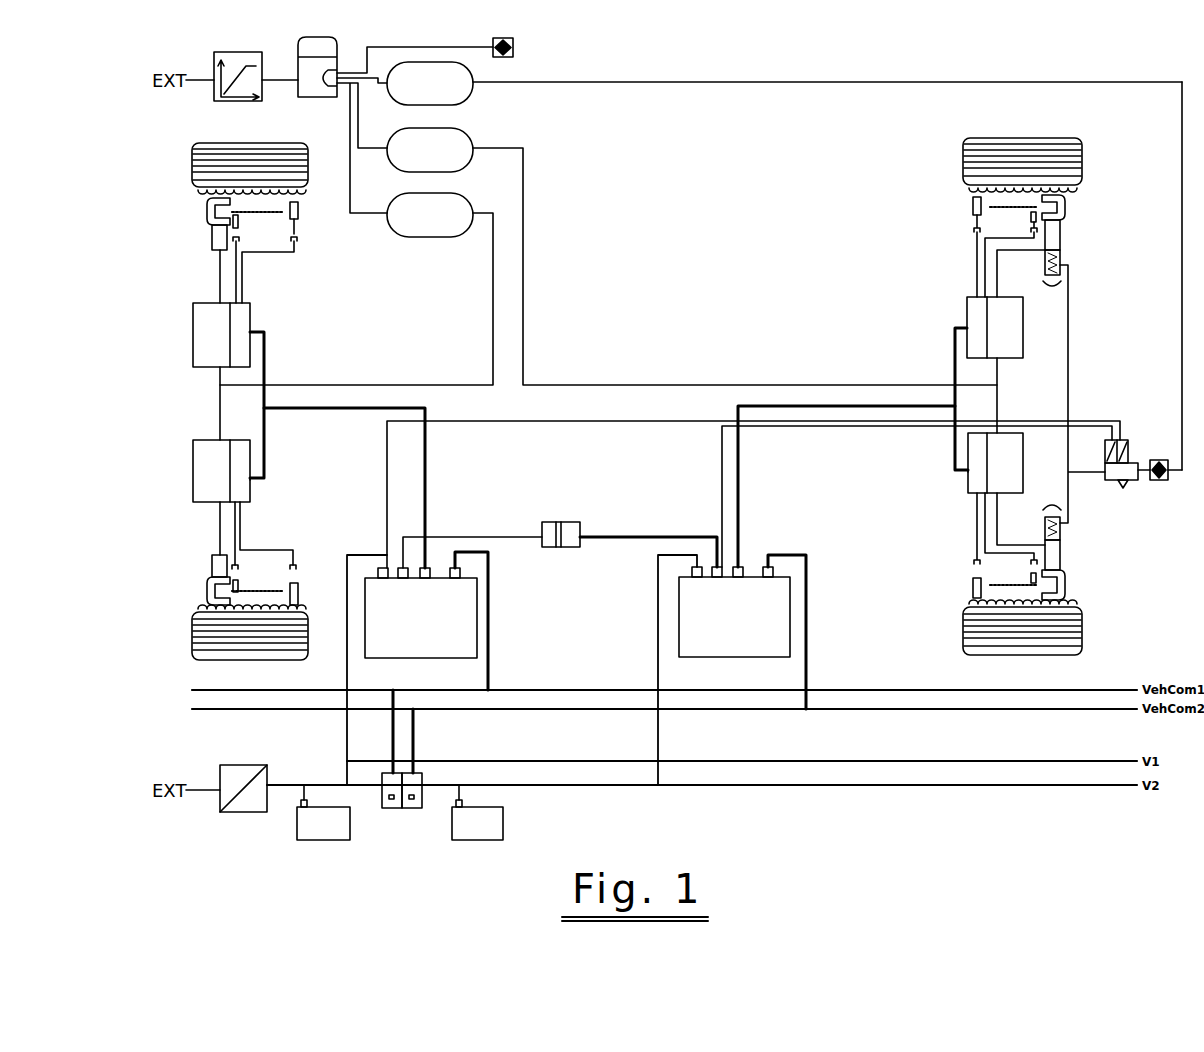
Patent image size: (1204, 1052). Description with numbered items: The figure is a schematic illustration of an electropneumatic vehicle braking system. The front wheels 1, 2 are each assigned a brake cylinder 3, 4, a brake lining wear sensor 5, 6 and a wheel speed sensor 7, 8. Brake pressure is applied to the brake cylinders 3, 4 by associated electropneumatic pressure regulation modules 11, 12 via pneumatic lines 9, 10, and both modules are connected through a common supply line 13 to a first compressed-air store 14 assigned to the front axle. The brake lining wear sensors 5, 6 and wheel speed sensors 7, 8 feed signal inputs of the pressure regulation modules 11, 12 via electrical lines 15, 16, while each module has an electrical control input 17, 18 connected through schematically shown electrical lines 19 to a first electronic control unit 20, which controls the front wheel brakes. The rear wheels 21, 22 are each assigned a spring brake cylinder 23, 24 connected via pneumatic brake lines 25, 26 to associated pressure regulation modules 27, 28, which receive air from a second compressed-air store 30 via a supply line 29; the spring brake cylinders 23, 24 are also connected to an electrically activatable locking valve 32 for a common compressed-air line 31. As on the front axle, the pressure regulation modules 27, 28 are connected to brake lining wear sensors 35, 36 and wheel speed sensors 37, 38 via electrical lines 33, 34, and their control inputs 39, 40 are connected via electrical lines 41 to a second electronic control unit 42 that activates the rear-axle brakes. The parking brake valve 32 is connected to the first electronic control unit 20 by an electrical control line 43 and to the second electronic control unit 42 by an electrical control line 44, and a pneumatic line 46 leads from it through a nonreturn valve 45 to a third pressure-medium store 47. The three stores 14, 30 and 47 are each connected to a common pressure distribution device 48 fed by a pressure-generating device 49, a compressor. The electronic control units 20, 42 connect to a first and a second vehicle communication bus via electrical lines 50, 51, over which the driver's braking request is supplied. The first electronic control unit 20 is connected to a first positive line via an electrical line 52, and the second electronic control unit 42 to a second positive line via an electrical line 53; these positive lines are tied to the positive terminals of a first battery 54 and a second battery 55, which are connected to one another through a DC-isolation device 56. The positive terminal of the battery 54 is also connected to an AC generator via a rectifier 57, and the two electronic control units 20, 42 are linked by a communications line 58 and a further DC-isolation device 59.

The front wheel 1 is at (192, 165).
The front wheel 2 is at (192, 636).
The brake cylinder 3 is at (207, 212).
The brake cylinder 4 is at (207, 590).
The brake lining wear sensor 5 is at (240, 224).
The brake lining wear sensor 6 is at (240, 588).
The wheel speed sensor 7 is at (299, 211).
The wheel speed sensor 8 is at (299, 598).
The pneumatic line 9 is at (219, 274).
The pneumatic line 10 is at (219, 527).
The electropneumatic pressure regulation module 11 is at (200, 326).
The electropneumatic pressure regulation module 12 is at (198, 458).
The common supply line 13 is at (396, 384).
The first compressed-air store 14 is at (428, 226).
The electrical line 15 is at (238, 268).
The electrical line 16 is at (243, 288).
The electrical control input 17 is at (265, 333).
The electrical control input 18 is at (252, 480).
The electrical lines 19 is at (326, 412).
The first electronic control unit 20 is at (422, 650).
The rear wheel 21 is at (1082, 163).
The rear wheel 22 is at (1082, 630).
The spring brake cylinder 23 is at (1061, 239).
The spring brake cylinder 24 is at (1061, 562).
The pneumatic brake line 25 is at (998, 276).
The pneumatic brake line 26 is at (998, 528).
The pressure regulation module 27 is at (1012, 310).
The pressure regulation module 28 is at (1012, 447).
The supply line 29 is at (716, 383).
The second compressed-air store 30 is at (462, 140).
The common compressed-air line 31 is at (1069, 352).
The parking brake valve 32 is at (1110, 482).
The electrical line 33 is at (976, 253).
The electrical line 34 is at (984, 278).
The brake lining wear sensor 35 is at (1030, 218).
The brake lining wear sensor 36 is at (1030, 580).
The wheel speed sensor 37 is at (972, 206).
The wheel speed sensor 38 is at (972, 588).
The control input 39 is at (958, 330).
The control input 40 is at (958, 478).
The electrical lines 41 is at (860, 404).
The second electronic control unit 42 is at (735, 650).
The electrical control line 43 is at (515, 424).
The electrical control line 44 is at (721, 478).
The nonreturn valve 45 is at (1160, 459).
The pneumatic line 46 is at (1181, 376).
The third pressure-medium store 47 is at (482, 79).
The pressure distribution device 48 is at (300, 70).
The pressure-generating device 49 is at (243, 51).
The electrical line 50 is at (488, 610).
The electrical line 51 is at (807, 597).
The electrical line 52 is at (346, 672).
The electrical line 53 is at (657, 640).
The first battery 54 is at (306, 842).
The second battery 55 is at (500, 826).
The DC-isolation device 56 is at (402, 810).
The rectifier 57 is at (238, 812).
The communications line 58 is at (510, 537).
The DC-isolation device 59 is at (563, 522).